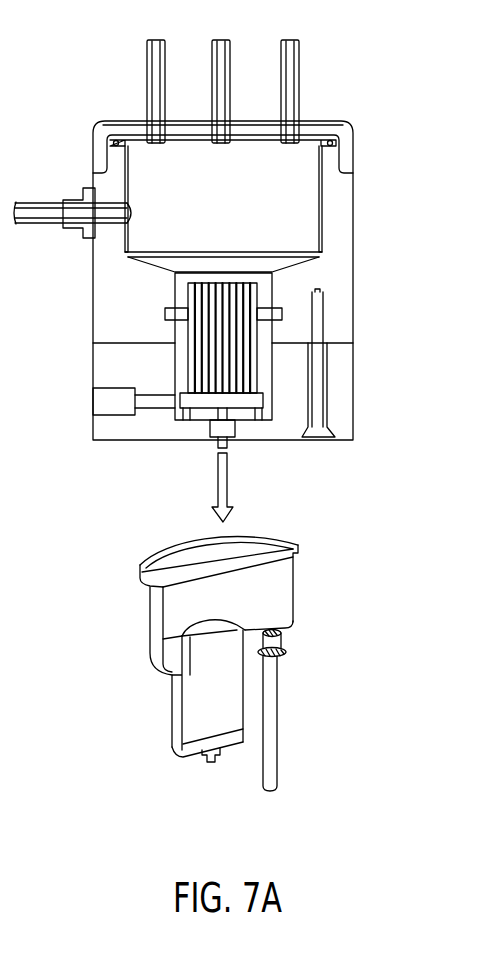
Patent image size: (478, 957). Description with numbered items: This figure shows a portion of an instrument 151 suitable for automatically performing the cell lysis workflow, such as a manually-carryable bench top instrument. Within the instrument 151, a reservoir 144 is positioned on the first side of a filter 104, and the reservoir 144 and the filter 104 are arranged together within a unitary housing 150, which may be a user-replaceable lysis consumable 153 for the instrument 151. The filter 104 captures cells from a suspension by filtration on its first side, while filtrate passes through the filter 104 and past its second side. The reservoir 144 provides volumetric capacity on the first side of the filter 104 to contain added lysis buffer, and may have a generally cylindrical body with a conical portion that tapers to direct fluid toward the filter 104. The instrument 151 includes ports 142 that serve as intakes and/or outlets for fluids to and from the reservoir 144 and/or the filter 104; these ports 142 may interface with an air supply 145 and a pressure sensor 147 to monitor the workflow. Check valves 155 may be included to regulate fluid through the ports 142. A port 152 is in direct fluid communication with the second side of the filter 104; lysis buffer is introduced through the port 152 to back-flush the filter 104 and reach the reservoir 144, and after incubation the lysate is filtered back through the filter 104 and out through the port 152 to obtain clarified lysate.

The filter 104 is at (187, 355).
The port 142 is at (110, 212).
The reservoir 144 is at (241, 224).
The air supply 145 is at (155, 39).
The pressure sensor 147 is at (290, 39).
The unitary housing 150 is at (148, 637).
The instrument 151 is at (342, 190).
The port 152 is at (230, 432).
The user-replaceable lysis consumable 153 is at (162, 603).
The check valve 155 is at (82, 237).